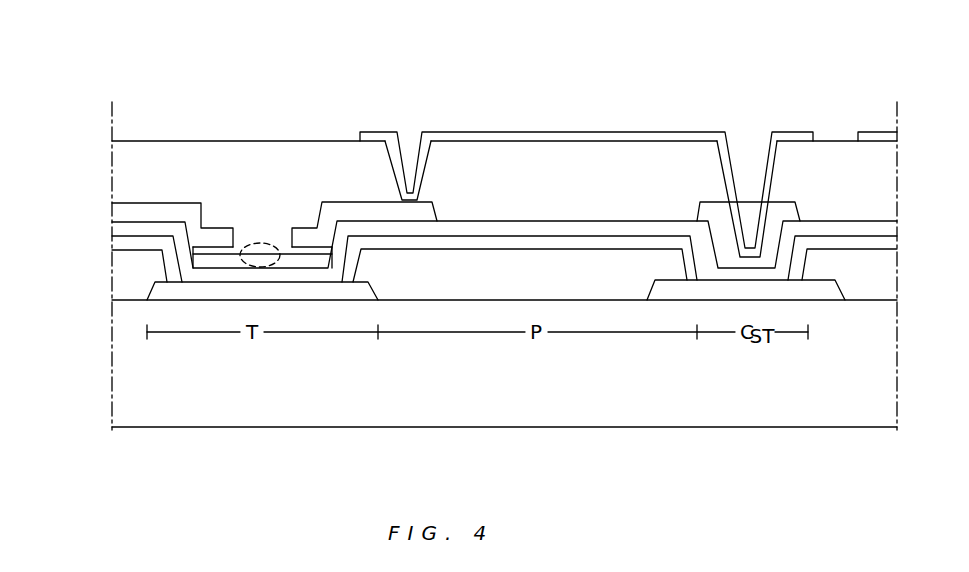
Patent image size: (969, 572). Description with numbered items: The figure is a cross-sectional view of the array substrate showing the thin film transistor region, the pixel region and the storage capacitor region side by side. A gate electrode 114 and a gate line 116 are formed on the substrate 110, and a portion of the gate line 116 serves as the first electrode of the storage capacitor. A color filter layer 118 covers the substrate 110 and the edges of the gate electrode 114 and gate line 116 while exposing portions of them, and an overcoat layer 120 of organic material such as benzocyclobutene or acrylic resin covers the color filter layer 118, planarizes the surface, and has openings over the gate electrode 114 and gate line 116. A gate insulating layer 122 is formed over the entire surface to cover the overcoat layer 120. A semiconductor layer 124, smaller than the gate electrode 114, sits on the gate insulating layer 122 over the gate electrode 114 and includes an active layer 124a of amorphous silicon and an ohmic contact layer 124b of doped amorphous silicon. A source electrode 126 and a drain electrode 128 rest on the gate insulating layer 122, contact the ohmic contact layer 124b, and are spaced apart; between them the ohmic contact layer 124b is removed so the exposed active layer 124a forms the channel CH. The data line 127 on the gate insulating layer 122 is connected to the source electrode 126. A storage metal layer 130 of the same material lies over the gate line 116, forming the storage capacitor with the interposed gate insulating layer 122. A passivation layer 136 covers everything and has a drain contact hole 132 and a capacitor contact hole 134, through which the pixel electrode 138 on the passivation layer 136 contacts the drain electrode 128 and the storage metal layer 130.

The substrate 110 is at (527, 396).
The gate electrode 114 is at (192, 290).
The gate line 116 is at (716, 290).
The color filter layer 118 is at (122, 281).
The overcoat layer 120 is at (122, 244).
The gate insulating layer 122 is at (582, 218).
The semiconductor layer 124 is at (286, 70).
The active layer 124a is at (238, 261).
The ohmic contact layer 124b is at (223, 250).
The channel CH is at (270, 244).
The source electrode 126 is at (207, 226).
The data line 127 is at (122, 192).
The drain electrode 128 is at (338, 195).
The storage metal layer 130 is at (712, 206).
The drain contact hole 132 is at (408, 138).
The capacitor contact hole 134 is at (745, 149).
The passivation layer 136 is at (172, 140).
The pixel electrode 138 is at (524, 130).